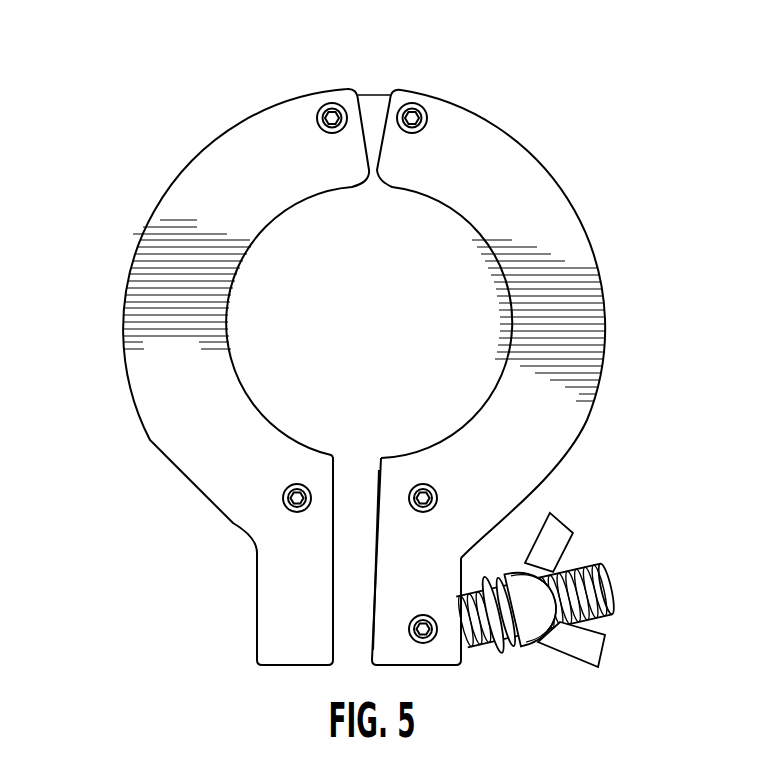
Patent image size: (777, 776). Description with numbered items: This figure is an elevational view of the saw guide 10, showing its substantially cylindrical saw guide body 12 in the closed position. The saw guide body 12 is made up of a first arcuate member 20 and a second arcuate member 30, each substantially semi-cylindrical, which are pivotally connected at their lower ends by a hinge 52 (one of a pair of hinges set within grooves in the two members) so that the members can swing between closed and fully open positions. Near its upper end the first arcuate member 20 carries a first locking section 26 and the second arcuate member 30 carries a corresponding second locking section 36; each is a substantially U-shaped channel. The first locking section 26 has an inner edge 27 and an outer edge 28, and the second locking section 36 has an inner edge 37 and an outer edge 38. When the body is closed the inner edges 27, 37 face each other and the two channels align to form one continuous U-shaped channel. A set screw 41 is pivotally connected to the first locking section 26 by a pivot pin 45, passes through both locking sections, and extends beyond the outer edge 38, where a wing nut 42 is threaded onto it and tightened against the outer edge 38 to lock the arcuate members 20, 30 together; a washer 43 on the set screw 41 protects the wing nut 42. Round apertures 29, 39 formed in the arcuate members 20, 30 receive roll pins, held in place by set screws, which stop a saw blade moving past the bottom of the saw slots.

The saw guide 10 is at (108, 148).
The saw guide body 12 is at (483, 104).
The first arcuate member 20 is at (500, 182).
The second arcuate member 30 is at (230, 172).
The hinge 52 is at (371, 104).
The first locking section 26 is at (430, 650).
The inner edge of first locking section 27 is at (378, 534).
The outer edge of first locking section 28 is at (463, 560).
The round aperture 29 is at (422, 484).
The pivot pin 45 is at (426, 615).
The second locking section 36 is at (270, 620).
The inner edge of second locking section 37 is at (334, 601).
The outer edge of second locking section 38 is at (257, 593).
The round aperture 39 is at (302, 485).
The set screw 41 is at (583, 589).
The wing nut 42 is at (583, 653).
The washer 43 is at (505, 650).